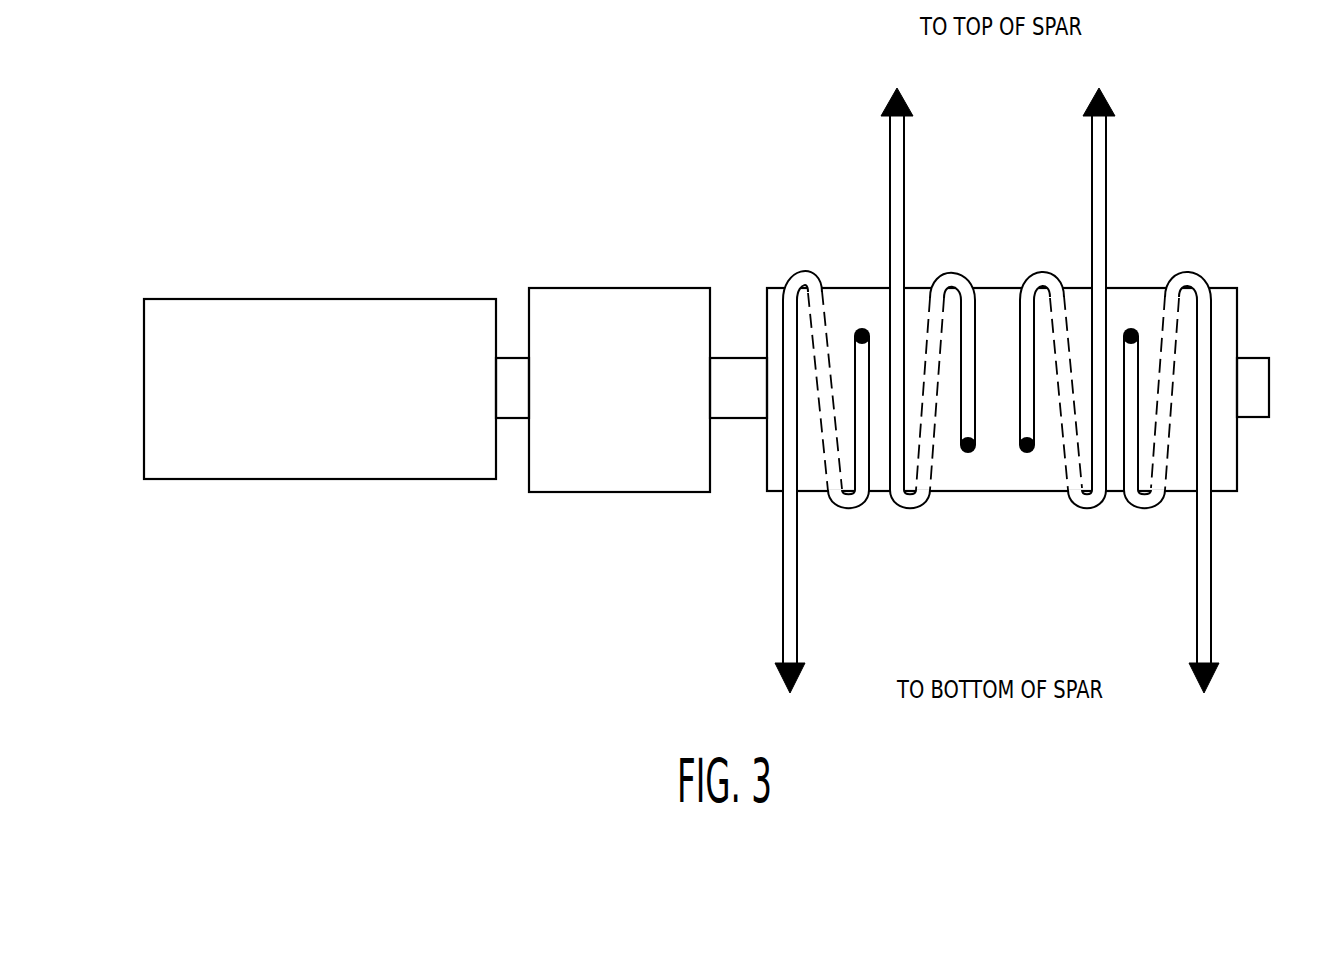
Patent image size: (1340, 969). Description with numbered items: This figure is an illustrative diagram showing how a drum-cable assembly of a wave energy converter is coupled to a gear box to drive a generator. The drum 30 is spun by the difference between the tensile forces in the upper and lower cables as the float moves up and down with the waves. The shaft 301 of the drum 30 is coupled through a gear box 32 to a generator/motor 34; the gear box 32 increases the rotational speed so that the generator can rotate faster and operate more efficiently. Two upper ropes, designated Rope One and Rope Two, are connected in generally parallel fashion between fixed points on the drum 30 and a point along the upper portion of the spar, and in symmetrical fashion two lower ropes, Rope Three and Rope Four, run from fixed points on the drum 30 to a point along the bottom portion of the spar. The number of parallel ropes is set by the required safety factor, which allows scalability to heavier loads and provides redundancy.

The generator/motor 34 is at (303, 299).
The gear box 32 is at (603, 288).
The shaft 301 is at (737, 357).
The drum 30 is at (990, 288).